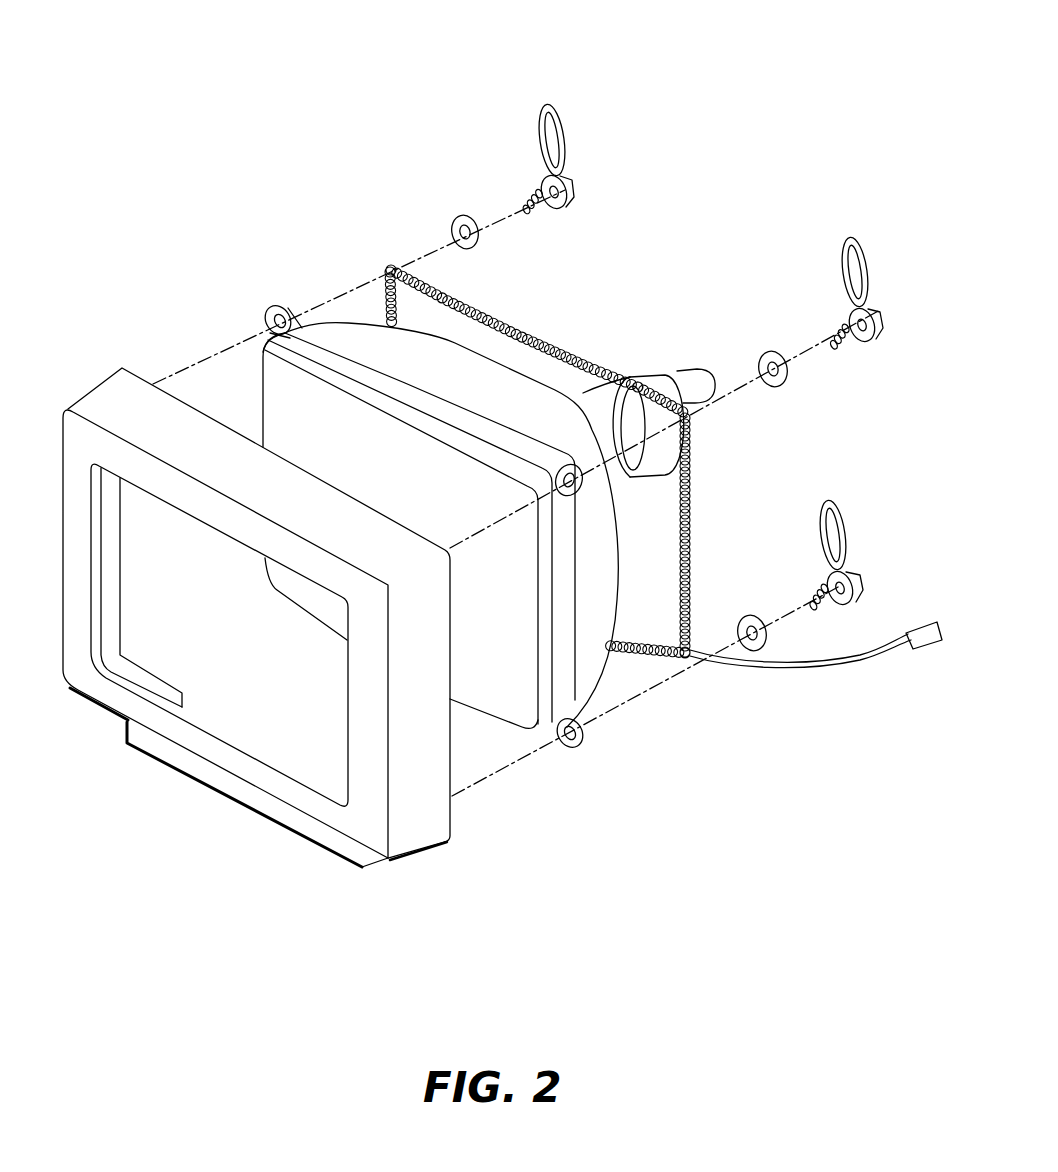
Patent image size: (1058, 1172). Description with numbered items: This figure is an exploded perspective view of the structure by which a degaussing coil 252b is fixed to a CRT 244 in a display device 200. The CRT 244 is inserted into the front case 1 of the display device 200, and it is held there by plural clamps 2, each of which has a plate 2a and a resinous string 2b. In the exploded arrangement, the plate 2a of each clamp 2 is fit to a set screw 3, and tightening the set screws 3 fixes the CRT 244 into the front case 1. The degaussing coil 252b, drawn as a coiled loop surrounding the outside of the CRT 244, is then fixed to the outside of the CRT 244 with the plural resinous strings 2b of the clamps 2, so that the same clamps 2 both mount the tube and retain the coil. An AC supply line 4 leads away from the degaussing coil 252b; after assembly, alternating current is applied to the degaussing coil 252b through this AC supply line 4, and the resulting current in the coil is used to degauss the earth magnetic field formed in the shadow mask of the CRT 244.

The front case 1 is at (137, 403).
The CRT 244 is at (350, 322).
The degaussing coil 252b is at (545, 334).
The clamp 2 is at (536, 177).
The plate 2a is at (470, 248).
The resinous string 2b is at (557, 113).
The set screw 3 is at (523, 203).
The AC supply line 4 is at (812, 668).
The display device 200 is at (643, 802).